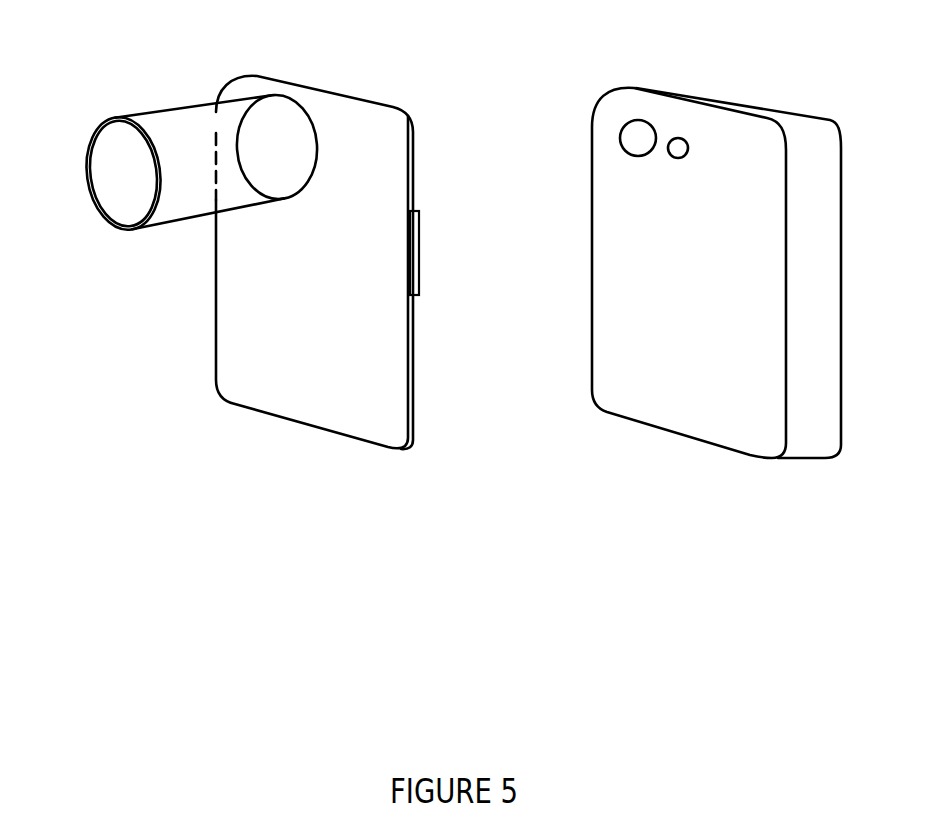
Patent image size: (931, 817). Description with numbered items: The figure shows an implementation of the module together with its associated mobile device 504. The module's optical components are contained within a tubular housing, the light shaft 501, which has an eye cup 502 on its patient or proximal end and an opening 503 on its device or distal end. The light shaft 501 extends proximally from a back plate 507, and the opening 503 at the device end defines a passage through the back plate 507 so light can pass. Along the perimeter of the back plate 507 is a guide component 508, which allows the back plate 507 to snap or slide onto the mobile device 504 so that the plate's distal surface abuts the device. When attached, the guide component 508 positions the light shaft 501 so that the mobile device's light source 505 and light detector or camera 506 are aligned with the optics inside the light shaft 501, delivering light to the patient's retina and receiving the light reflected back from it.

The light shaft 501 is at (167, 130).
The eye cup 502 is at (92, 203).
The device end opening 503 is at (295, 102).
The mobile device 504 is at (653, 388).
The light source 505 is at (678, 140).
The light detector 506 is at (635, 128).
The back plate 507 is at (237, 273).
The guide component 508 is at (413, 242).